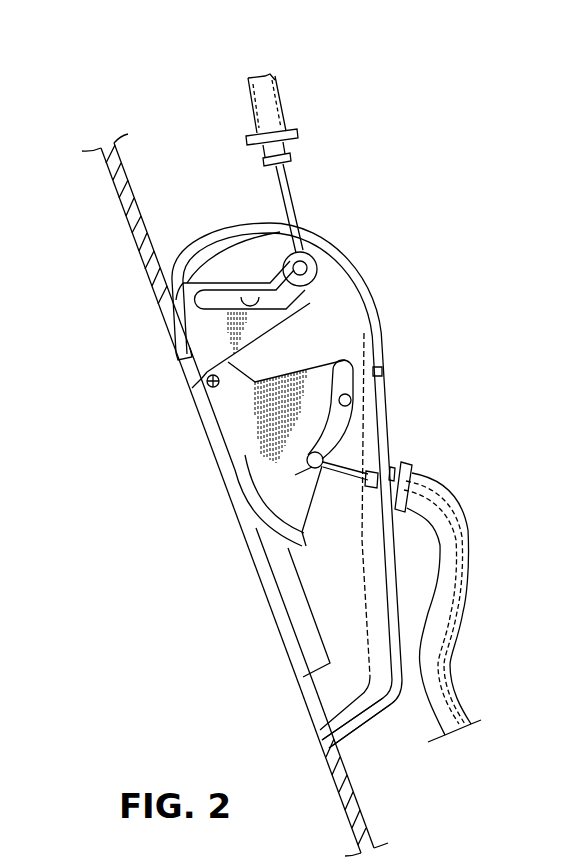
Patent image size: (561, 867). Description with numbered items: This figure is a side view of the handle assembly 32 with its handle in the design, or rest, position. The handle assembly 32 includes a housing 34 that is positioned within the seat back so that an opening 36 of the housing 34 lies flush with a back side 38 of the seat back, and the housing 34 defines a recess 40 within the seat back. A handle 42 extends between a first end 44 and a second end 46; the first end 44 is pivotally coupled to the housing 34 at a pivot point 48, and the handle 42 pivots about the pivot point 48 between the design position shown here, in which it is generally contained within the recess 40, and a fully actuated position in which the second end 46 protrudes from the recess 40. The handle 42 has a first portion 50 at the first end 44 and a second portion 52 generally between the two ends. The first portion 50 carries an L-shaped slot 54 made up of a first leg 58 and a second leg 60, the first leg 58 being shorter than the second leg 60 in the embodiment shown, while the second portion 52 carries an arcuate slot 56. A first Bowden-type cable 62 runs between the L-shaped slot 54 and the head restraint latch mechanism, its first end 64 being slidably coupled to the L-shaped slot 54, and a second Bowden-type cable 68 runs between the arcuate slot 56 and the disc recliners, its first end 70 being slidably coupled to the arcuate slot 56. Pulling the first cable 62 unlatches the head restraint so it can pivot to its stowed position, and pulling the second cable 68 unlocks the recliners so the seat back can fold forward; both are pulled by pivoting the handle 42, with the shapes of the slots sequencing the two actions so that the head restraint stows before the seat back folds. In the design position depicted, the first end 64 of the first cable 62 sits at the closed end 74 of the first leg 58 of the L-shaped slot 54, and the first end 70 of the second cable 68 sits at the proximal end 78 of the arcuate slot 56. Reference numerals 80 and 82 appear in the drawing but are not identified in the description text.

The handle assembly 32 is at (193, 593).
The housing 34 is at (366, 316).
The opening 36 is at (318, 718).
The back side 38 is at (352, 811).
The recess 40 is at (343, 734).
The handle 42 is at (270, 563).
The first end 44 is at (190, 352).
The second end 46 is at (305, 658).
The pivot point 48 is at (208, 383).
The first portion 50 is at (268, 336).
The second portion 52 is at (242, 449).
The L-shaped slot 54 is at (238, 296).
The arcuate slot 56 is at (351, 399).
The first leg 58 is at (320, 299).
The second leg 60 is at (195, 257).
The first Bowden-type cable 62 is at (289, 178).
The first end of first cable 64 is at (301, 261).
The second Bowden-type cable 68 is at (450, 530).
The first end of second cable 70 is at (330, 461).
The closed end 74 is at (307, 268).
The proximal end 78 is at (314, 468).
The stop block 80 is at (355, 369).
The arm end 82 is at (188, 285).